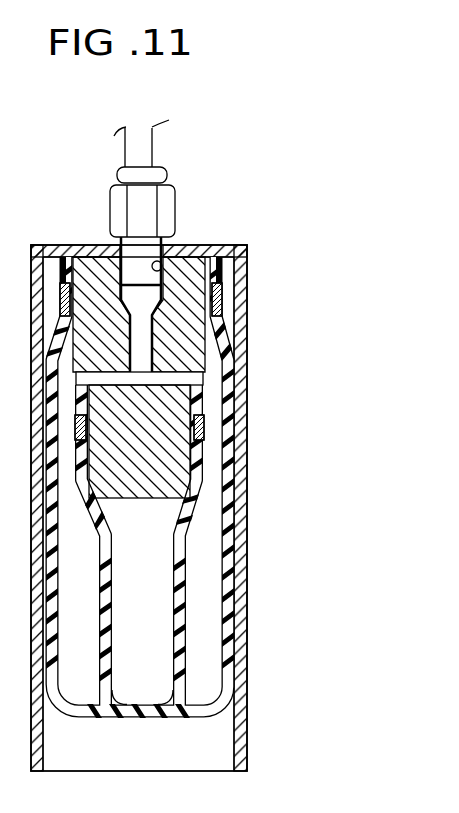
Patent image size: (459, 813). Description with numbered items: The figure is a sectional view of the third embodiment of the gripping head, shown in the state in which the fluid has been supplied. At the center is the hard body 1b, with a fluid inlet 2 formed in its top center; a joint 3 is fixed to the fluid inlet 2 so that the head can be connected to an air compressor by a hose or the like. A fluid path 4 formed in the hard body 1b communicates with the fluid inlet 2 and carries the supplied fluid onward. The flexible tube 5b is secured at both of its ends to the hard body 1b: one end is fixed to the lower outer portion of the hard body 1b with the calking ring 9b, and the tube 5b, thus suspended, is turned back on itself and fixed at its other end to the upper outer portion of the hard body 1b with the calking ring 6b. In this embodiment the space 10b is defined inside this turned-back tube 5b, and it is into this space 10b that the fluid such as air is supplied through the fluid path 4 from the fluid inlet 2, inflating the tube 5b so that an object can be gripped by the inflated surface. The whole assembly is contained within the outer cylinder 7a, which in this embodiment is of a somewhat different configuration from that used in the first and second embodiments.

The joint 3 is at (166, 198).
The fluid inlet 2 is at (160, 266).
The hard body 1b is at (213, 246).
The calking ring 6b is at (216, 297).
The outer cylinder 7a is at (232, 344).
The fluid path 4 is at (197, 376).
The calking ring 9b is at (205, 428).
The tube 5b is at (232, 503).
The space 10b is at (203, 572).